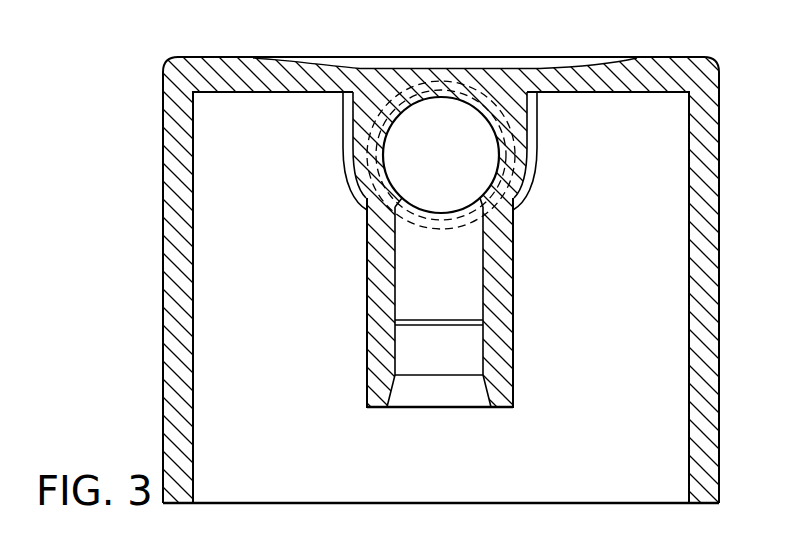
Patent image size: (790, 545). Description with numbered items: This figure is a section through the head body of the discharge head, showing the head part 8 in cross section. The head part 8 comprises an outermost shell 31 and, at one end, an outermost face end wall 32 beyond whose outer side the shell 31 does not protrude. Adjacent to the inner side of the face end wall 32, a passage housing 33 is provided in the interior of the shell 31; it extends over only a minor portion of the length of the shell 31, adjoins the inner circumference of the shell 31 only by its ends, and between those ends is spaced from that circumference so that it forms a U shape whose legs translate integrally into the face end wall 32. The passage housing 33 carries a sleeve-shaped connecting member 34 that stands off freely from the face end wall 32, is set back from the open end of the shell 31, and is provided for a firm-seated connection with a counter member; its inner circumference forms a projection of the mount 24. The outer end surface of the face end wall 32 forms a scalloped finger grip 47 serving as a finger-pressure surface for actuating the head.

The head part 8 is at (153, 55).
The mount 24 is at (483, 158).
The outermost shell 31 is at (163, 422).
The face end wall 32 is at (282, 93).
The passage housing 33 is at (340, 181).
The sleeve-shaped connecting member 34 is at (503, 318).
The scalloped finger grip 47 is at (482, 68).